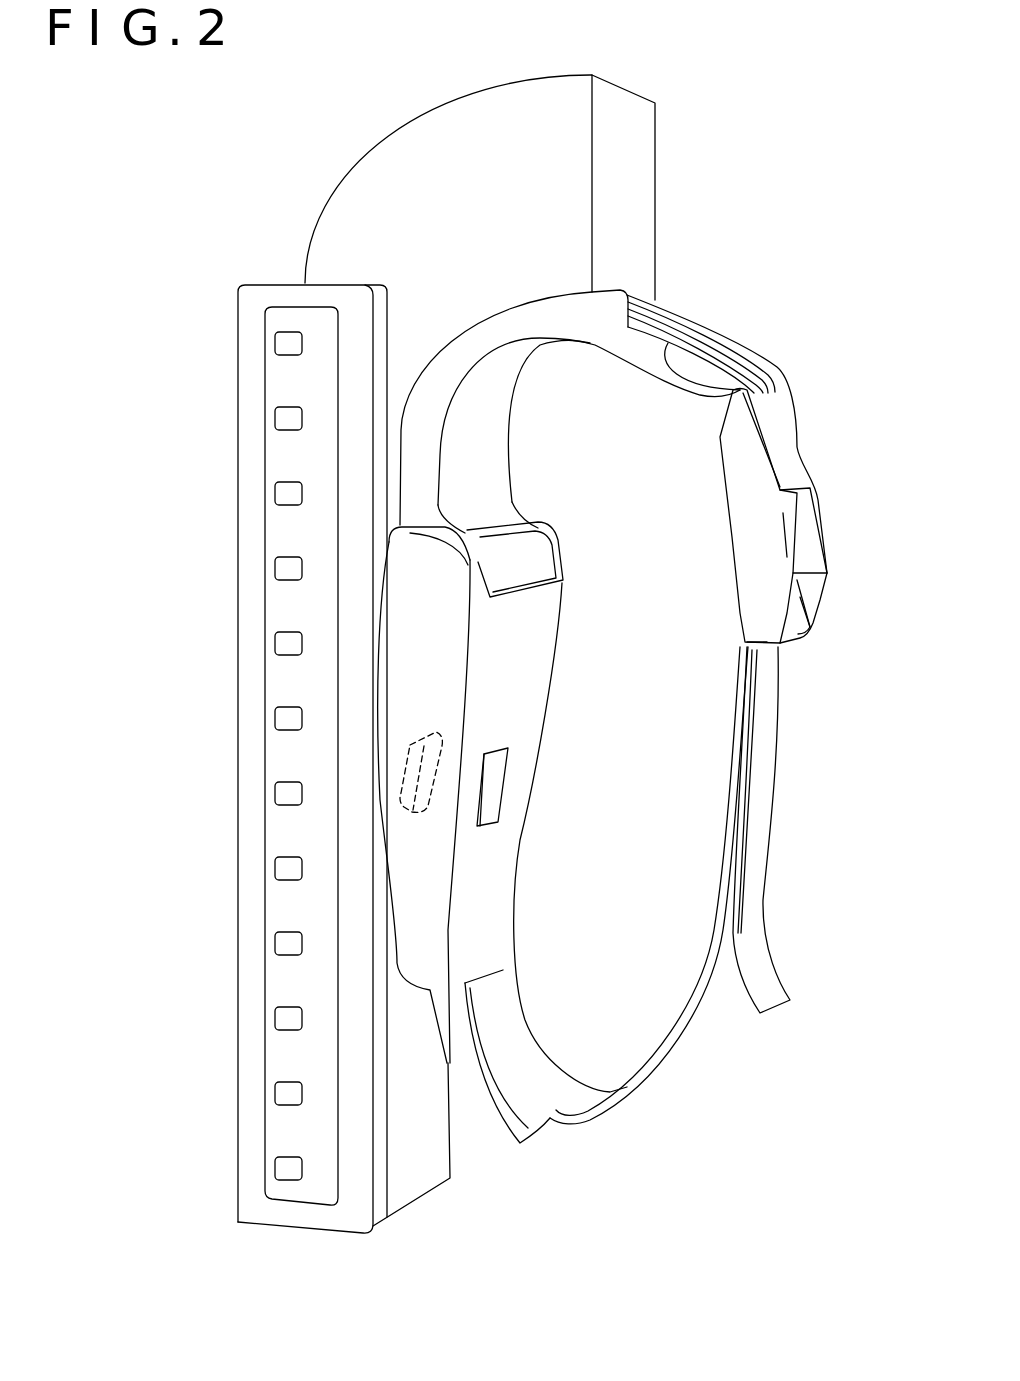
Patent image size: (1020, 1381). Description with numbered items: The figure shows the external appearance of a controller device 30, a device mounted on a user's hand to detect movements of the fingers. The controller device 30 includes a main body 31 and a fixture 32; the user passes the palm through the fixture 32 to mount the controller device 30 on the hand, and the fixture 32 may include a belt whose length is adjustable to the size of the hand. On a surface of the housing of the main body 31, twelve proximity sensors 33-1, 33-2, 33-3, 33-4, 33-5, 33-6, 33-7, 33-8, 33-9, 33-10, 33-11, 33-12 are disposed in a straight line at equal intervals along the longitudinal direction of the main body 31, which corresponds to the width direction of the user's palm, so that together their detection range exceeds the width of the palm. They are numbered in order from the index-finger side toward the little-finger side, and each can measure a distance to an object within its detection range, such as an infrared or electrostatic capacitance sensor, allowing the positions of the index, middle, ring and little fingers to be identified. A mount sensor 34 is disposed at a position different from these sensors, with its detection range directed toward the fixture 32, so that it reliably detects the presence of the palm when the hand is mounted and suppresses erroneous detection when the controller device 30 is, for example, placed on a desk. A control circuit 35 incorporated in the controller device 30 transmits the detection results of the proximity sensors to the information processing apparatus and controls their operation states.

The controller device 30 is at (569, 1268).
The main body 31 is at (432, 1195).
The fixture 32 is at (667, 1062).
The proximity sensor 33-1 is at (275, 343).
The proximity sensor 33-2 is at (275, 418).
The proximity sensor 33-3 is at (275, 493).
The proximity sensor 33-4 is at (275, 568).
The proximity sensor 33-5 is at (275, 643).
The proximity sensor 33-6 is at (275, 718).
The proximity sensor 33-7 is at (275, 793).
The proximity sensor 33-8 is at (275, 868).
The proximity sensor 33-9 is at (275, 943).
The proximity sensor 33-10 is at (275, 1018).
The proximity sensor 33-11 is at (275, 1093).
The proximity sensor 33-12 is at (275, 1168).
The mount sensor 34 is at (508, 789).
The control circuit 35 is at (440, 740).